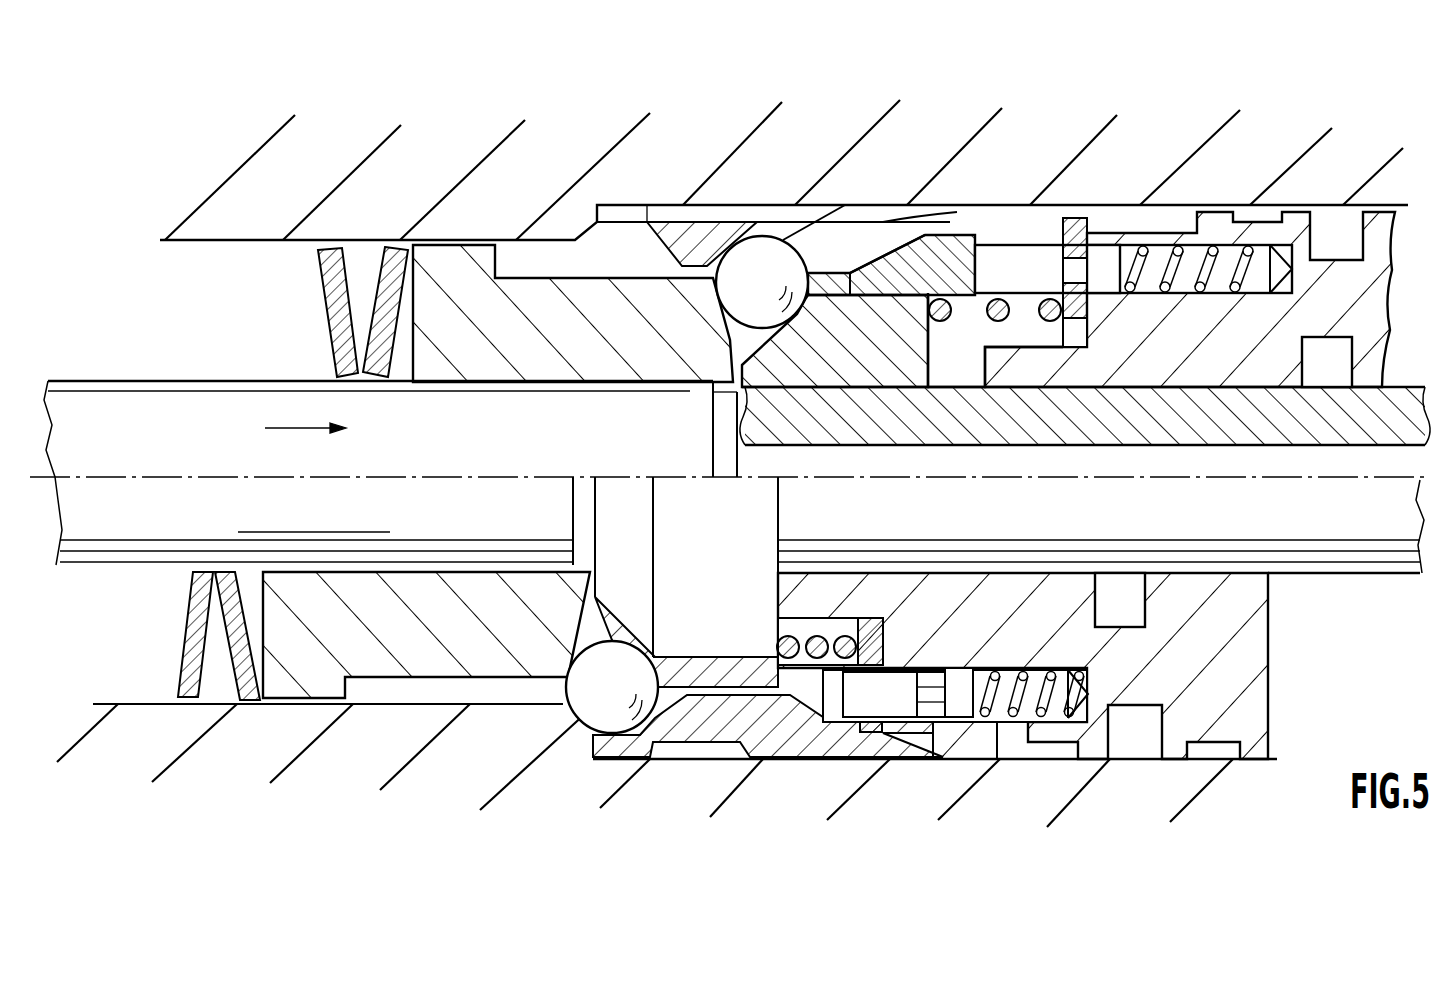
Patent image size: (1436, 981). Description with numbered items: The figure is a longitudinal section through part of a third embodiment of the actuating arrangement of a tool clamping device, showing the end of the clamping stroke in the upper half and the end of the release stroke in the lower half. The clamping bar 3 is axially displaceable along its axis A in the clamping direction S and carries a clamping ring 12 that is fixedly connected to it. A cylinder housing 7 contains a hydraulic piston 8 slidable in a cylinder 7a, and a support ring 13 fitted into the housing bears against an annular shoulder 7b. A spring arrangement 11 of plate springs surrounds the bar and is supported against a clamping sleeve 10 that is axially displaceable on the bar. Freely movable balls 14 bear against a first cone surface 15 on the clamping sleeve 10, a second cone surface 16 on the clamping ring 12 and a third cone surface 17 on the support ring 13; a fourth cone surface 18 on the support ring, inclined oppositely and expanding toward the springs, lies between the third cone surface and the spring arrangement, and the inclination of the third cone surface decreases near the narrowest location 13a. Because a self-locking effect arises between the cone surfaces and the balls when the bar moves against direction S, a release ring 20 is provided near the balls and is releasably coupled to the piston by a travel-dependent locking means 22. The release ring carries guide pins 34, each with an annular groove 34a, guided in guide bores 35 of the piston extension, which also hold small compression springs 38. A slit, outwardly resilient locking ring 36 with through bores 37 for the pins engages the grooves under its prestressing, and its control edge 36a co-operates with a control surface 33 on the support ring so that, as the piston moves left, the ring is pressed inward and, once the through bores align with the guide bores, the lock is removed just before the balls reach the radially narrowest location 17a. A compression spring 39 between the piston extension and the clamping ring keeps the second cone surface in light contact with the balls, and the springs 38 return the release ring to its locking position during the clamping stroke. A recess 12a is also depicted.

The clamping bar 3 is at (118, 556).
The cylinder housing 7 is at (398, 155).
The cylinder 7a is at (1155, 220).
The annular shoulder 7b is at (595, 200).
The piston 8 is at (1384, 300).
The clamping sleeve 10 is at (543, 365).
The spring arrangement 11 is at (330, 311).
The clamping ring 12 is at (900, 260).
The recess of clamping ring 12a is at (975, 300).
The support ring 13 is at (728, 215).
The narrowest location of the support ring 13a is at (690, 215).
The balls 14 is at (852, 225).
The first cone surface 15 is at (690, 388).
The second cone surface 16 is at (745, 415).
The third cone surface 17 is at (806, 262).
The radially narrowest location of the third cone surface 17a is at (762, 228).
The fourth cone surface 18 is at (648, 215).
The release ring 20 is at (910, 205).
The locking means 22 is at (1103, 208).
The control surface 33 is at (998, 298).
The guide pins 34 is at (850, 713).
The annular groove 34a is at (933, 717).
The guide bores 35 is at (1030, 722).
The locking ring 36 is at (830, 668).
The control edge 36a is at (1078, 230).
The through bore 37 is at (1062, 237).
The compression springs 38 is at (998, 722).
The compression spring 39 is at (778, 660).
The axis A is at (420, 480).
The clamping direction S is at (305, 410).